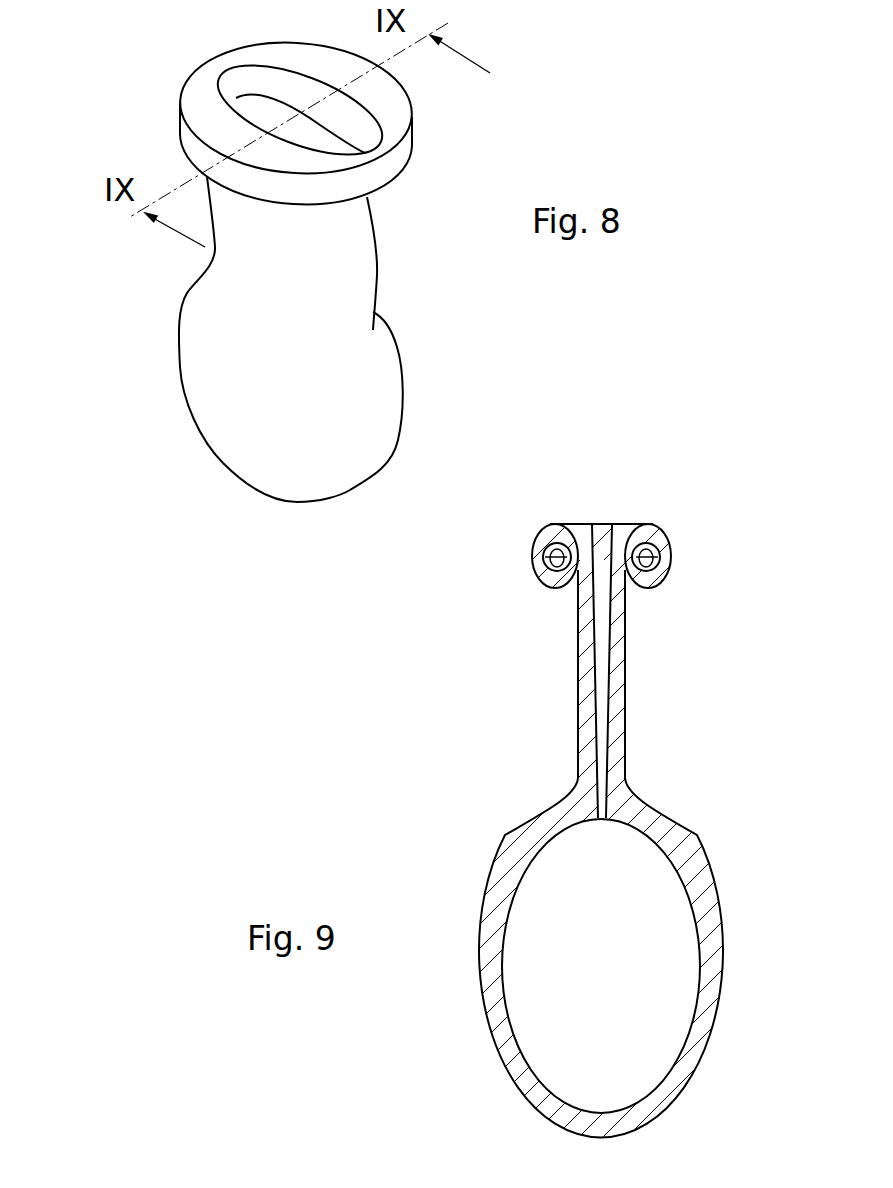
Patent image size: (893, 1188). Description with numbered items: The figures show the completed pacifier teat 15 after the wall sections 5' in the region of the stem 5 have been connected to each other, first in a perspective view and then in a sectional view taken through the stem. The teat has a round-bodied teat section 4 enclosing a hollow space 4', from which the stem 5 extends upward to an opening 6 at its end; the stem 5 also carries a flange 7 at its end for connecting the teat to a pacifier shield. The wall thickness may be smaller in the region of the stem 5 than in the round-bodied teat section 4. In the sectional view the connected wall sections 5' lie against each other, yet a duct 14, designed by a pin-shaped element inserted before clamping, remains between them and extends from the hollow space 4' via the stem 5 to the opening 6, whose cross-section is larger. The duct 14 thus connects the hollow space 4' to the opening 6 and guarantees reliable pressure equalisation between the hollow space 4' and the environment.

In FIG. 8, the teat section 4 is at (327, 339).
In FIG. 9, the teat section 4 is at (446, 594).
In FIG. 9, the hollow space 4' is at (553, 966).
In FIG. 8, the stem 5 is at (425, 263).
In FIG. 9, the stem 5 is at (446, 594).
In FIG. 9, the wall sections 5' is at (599, 673).
In FIG. 8, the opening 6 is at (261, 110).
In FIG. 9, the opening 6 is at (600, 531).
In FIG. 8, the flange 7 is at (200, 105).
In FIG. 9, the duct 14 is at (602, 748).
In FIG. 8, the pacifier teat 15 is at (179, 445).
In FIG. 9, the pacifier teat 15 is at (740, 1050).